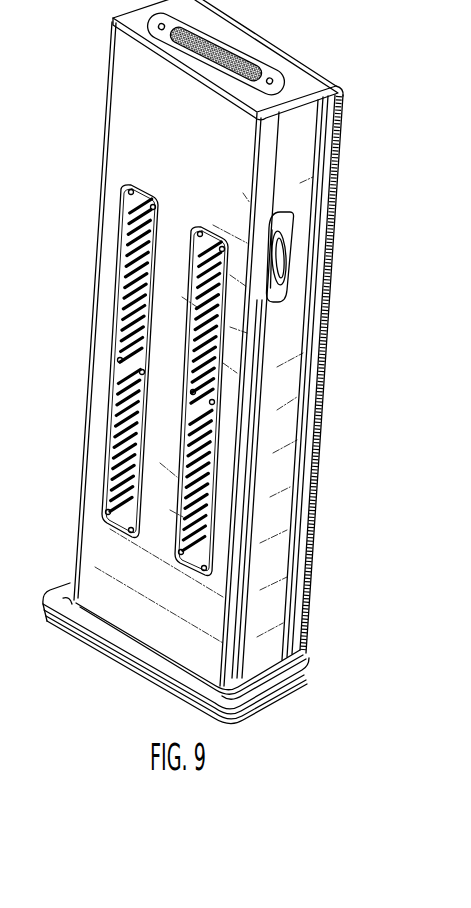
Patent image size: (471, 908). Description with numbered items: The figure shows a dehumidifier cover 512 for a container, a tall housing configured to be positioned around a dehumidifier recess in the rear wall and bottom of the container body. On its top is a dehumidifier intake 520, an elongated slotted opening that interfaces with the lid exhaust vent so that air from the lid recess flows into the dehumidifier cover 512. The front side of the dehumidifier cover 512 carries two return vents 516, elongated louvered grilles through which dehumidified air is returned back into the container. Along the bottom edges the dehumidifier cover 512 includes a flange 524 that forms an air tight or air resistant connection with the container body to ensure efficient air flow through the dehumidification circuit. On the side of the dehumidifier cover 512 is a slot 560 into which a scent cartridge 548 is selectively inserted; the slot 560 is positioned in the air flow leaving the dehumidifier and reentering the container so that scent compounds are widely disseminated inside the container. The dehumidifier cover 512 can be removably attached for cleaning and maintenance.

The dehumidifier cover 512 is at (197, 126).
The return vents 516 is at (118, 290).
The dehumidifier intake 520 is at (240, 58).
The flange 524 is at (272, 688).
The scent cartridge 548 is at (273, 291).
The slot 560 is at (290, 213).